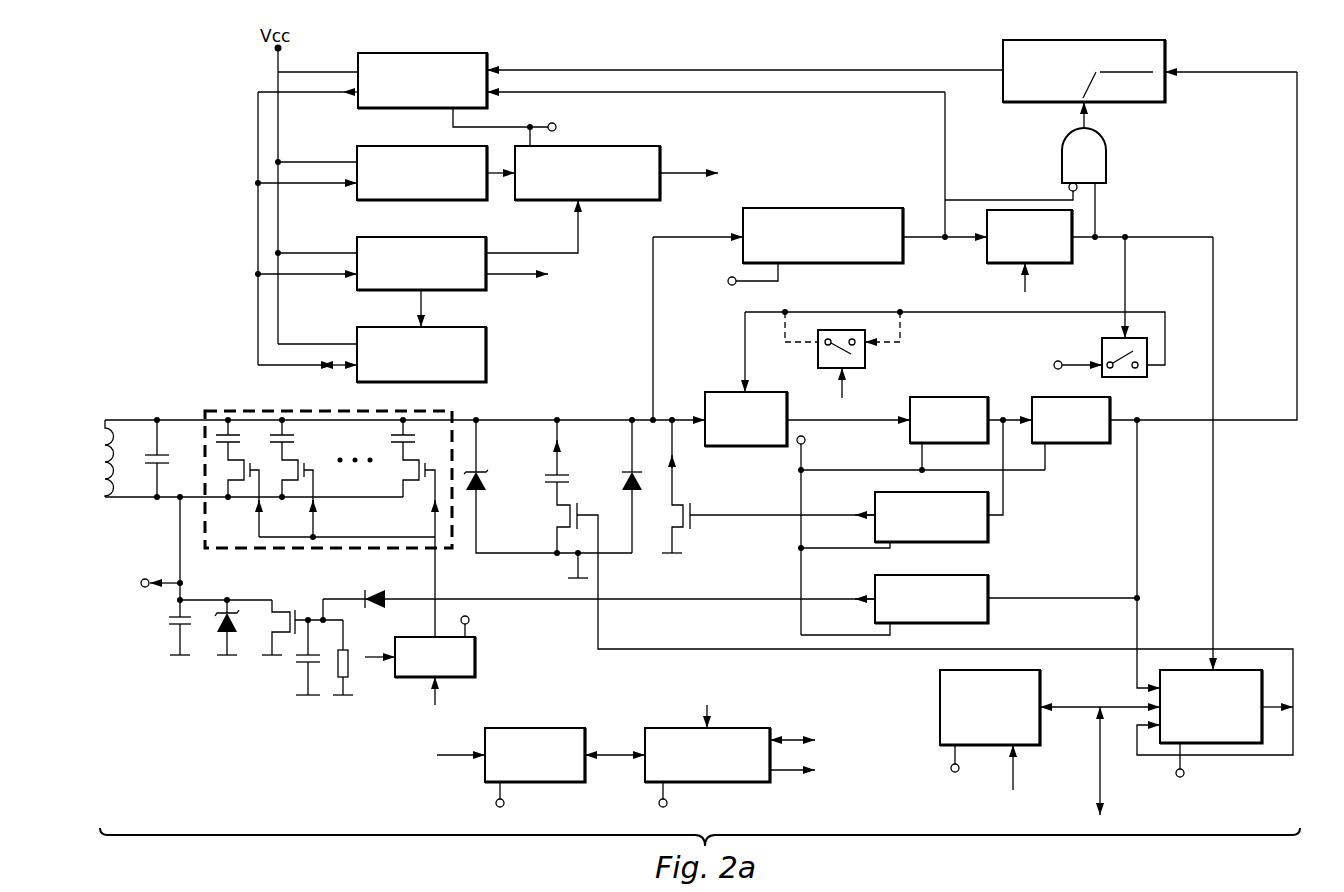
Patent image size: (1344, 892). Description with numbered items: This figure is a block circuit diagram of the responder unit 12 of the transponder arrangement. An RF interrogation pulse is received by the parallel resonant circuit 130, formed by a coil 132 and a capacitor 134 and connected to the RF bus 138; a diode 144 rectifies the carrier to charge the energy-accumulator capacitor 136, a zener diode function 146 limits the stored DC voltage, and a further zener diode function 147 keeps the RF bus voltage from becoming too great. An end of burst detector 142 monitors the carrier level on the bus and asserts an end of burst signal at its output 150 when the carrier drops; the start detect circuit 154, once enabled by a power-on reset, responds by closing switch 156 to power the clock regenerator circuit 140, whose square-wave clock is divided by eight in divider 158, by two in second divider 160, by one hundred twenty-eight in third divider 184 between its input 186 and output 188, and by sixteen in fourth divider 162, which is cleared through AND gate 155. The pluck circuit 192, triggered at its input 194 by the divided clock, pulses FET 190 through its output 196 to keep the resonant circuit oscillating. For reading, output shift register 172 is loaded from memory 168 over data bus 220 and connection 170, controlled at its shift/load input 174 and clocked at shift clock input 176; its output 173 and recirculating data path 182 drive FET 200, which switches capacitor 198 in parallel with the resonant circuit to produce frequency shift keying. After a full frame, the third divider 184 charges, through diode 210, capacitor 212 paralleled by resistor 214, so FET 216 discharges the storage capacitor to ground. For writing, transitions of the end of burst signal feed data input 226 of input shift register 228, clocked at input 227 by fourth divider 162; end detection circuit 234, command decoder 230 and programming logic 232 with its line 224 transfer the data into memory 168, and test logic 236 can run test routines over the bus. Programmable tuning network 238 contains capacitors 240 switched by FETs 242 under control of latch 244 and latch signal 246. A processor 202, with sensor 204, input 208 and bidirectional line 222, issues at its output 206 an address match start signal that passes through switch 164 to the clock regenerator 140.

The responder unit 12 is at (222, 148).
The parallel resonant circuit 130 is at (135, 498).
The coil 132 is at (122, 420).
The capacitor 134 is at (178, 455).
The capacitor 136 is at (168, 620).
The RF bus 138 is at (583, 420).
The clock regenerator circuit 140 is at (932, 397).
The end of burst detector 142 is at (808, 208).
The diode 144 is at (645, 490).
The zener diode function 146 is at (218, 642).
The zener diode 147 is at (490, 490).
The output of end of burst detection circuit 150 is at (898, 258).
The start detect circuit 154 is at (1003, 265).
The AND gate 155 is at (1105, 162).
The switch 156 is at (1128, 380).
The divider 158 is at (975, 398).
The second divider 160 is at (1068, 445).
The fourth divider 162 is at (1005, 52).
The switch 164 is at (816, 358).
The memory 168 is at (938, 688).
The data bus 170 is at (1042, 705).
The output shift register 172 is at (1258, 742).
The output of shift register 173 is at (1265, 690).
The shift/load input 174 is at (1220, 665).
The shift clock input 176 is at (1165, 685).
The data path 182 is at (1212, 760).
The third divider 184 is at (982, 590).
The input of third divider 186 is at (990, 606).
The counter output line 188 is at (870, 592).
The field-effect transistor 190 is at (695, 525).
The pluck circuit 192 is at (978, 540).
The input line 194 is at (990, 518).
The output line 196 is at (870, 508).
The capacitor 198 is at (545, 476).
The field-effect transistor 200 is at (580, 495).
The processor 202 is at (695, 785).
The sensor 204 is at (540, 785).
The output of processor 206 is at (848, 398).
The input of processor 208 is at (703, 720).
The diode 210 is at (373, 590).
The capacitor 212 is at (318, 670).
The resistor 214 is at (355, 672).
The field-effect transistor 216 is at (293, 645).
The data bus 220 is at (257, 240).
The bidirectional line 222 is at (795, 738).
The signal line 224 is at (672, 180).
The data input 226 is at (497, 90).
The clock input 227 is at (497, 70).
The input shift register 228 is at (425, 58).
The command decoder 230 is at (370, 240).
The programming logic 232 is at (622, 150).
The end detection circuit 234 is at (370, 150).
The test logic 236 is at (378, 330).
The programmable tuning network 238 is at (455, 410).
The capacitor 240 is at (296, 440).
The field-effect transistor 242 is at (312, 468).
The latch 244 is at (478, 660).
The latch signal 246 is at (500, 278).